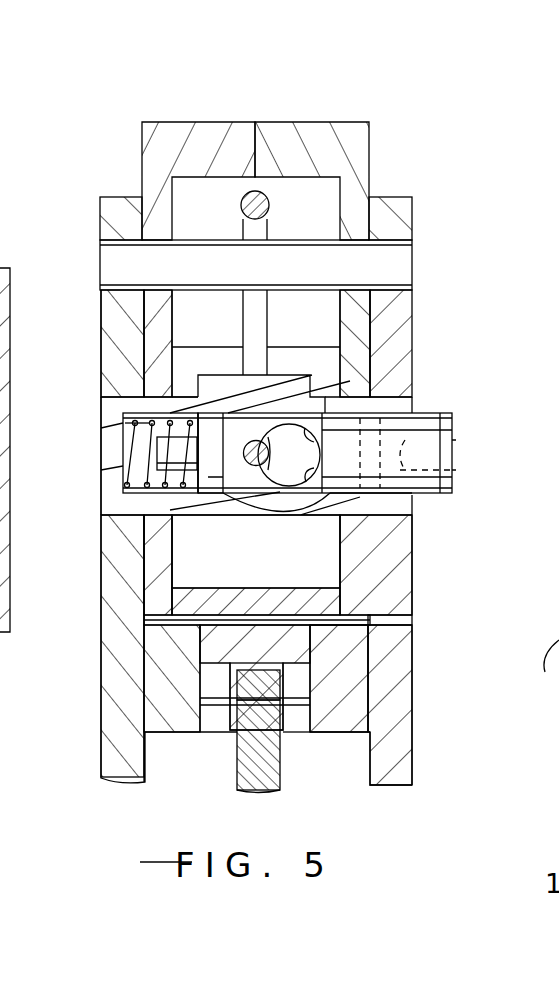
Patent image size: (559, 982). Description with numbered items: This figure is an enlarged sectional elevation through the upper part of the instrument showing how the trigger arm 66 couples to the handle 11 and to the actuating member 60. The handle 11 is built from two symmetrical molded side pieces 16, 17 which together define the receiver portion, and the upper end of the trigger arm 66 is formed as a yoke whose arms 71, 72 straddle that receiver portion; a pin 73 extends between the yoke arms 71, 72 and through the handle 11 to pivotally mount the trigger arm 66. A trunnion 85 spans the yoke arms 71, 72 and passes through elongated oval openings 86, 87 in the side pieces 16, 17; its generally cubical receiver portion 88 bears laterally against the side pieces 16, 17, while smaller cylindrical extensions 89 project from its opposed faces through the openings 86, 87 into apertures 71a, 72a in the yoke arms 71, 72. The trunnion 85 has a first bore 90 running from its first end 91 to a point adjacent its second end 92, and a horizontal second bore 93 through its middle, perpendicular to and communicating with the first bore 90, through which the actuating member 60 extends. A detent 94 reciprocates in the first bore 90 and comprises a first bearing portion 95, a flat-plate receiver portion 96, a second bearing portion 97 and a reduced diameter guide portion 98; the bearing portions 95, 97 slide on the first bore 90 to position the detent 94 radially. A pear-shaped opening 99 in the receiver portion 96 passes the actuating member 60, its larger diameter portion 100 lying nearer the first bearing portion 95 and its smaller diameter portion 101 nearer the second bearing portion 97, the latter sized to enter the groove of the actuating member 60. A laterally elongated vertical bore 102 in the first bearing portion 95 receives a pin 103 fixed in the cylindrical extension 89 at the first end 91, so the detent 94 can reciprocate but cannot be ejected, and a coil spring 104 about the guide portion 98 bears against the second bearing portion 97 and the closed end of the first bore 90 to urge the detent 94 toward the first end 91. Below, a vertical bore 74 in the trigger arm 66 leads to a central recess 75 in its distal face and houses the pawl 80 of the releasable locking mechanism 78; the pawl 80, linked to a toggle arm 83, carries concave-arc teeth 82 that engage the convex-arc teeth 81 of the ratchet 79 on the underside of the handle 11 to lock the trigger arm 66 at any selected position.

The handle 11 is at (240, 132).
The side piece 16 is at (172, 135).
The side piece 17 is at (303, 135).
The actuating member 60 is at (400, 510).
The trigger arm 66 is at (128, 745).
The yoke arm 71 is at (116, 196).
The aperture 71a is at (100, 400).
The yoke arm 72 is at (392, 210).
The aperture 72a is at (380, 410).
The pin 73 is at (400, 258).
The bore 74 is at (207, 732).
The central recess 75 is at (372, 756).
The releasable locking mechanism 78 is at (350, 655).
The ratchet 79 is at (360, 640).
The pawl 80 is at (222, 648).
The teeth 81 is at (322, 640).
The teeth 82 is at (200, 628).
The toggle arm 83 is at (240, 770).
The trunnion 85 is at (205, 500).
The opening 86 is at (122, 416).
The opening 87 is at (400, 400).
The receiver portion 88 is at (175, 562).
The cylindrical extension 89 is at (118, 430).
The first bore 90 is at (445, 492).
The first end 91 is at (452, 446).
The second end 92 is at (200, 495).
The second bore 93 is at (270, 443).
The detent 94 is at (452, 426).
The first bearing portion 95 is at (452, 468).
The receiver portion 96 is at (340, 500).
The second bearing portion 97 is at (210, 427).
The guide portion 98 is at (135, 442).
The pear-shaped opening 99 is at (309, 455).
The larger diameter portion 100 is at (250, 517).
The smaller diameter portion 101 is at (223, 460).
The vertical bore 102 is at (440, 470).
The pin 103 is at (410, 500).
The spring 104 is at (160, 452).